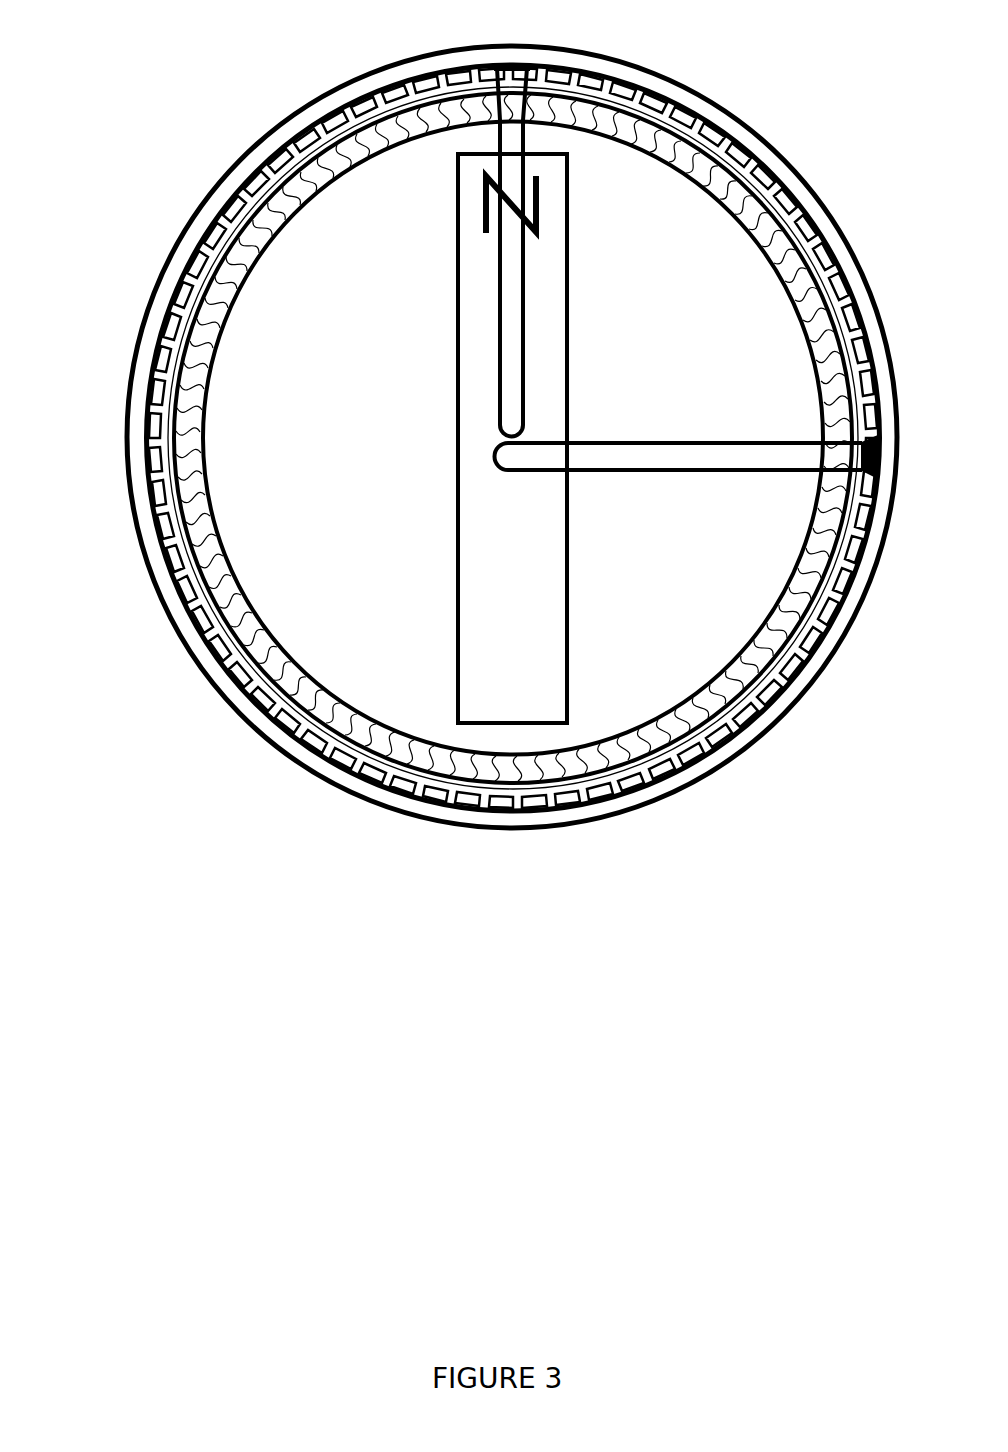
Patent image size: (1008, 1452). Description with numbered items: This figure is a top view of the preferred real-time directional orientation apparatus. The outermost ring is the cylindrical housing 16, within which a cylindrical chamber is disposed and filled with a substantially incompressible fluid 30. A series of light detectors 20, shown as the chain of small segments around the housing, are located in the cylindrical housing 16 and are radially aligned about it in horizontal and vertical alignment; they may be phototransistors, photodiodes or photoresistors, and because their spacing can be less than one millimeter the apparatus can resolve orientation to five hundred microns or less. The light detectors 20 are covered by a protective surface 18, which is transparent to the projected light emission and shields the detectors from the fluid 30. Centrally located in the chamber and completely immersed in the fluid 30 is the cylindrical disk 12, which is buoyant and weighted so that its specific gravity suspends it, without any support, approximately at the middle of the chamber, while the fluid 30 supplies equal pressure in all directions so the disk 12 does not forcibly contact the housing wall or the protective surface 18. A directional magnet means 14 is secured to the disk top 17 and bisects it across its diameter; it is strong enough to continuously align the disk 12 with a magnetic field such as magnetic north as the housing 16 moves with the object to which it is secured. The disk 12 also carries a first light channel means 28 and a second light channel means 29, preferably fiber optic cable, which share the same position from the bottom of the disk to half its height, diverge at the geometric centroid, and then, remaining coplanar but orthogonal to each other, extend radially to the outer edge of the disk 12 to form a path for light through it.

The cylindrical disk 12 is at (243, 607).
The directional magnet means 14 is at (507, 547).
The cylindrical housing 16 is at (128, 497).
The disk top 17 is at (346, 442).
The protective surface 18 is at (250, 190).
The light detectors 20 is at (150, 378).
The first light channel means 28 is at (512, 322).
The second light channel means 29 is at (685, 457).
The fluid 30 is at (370, 135).